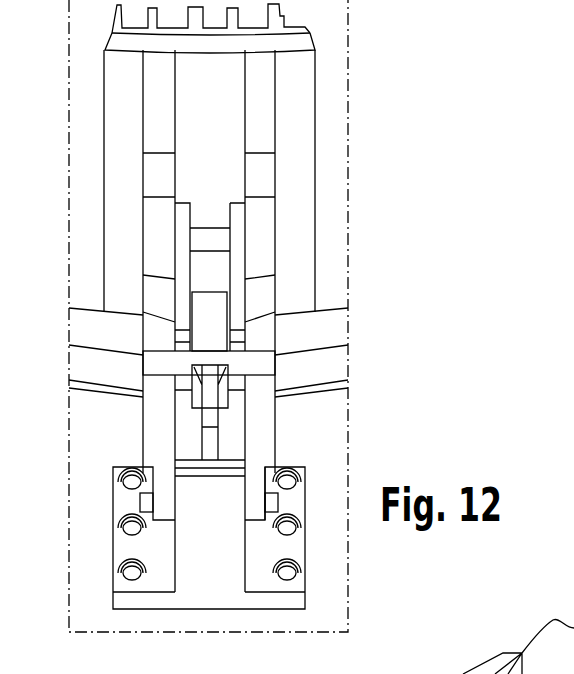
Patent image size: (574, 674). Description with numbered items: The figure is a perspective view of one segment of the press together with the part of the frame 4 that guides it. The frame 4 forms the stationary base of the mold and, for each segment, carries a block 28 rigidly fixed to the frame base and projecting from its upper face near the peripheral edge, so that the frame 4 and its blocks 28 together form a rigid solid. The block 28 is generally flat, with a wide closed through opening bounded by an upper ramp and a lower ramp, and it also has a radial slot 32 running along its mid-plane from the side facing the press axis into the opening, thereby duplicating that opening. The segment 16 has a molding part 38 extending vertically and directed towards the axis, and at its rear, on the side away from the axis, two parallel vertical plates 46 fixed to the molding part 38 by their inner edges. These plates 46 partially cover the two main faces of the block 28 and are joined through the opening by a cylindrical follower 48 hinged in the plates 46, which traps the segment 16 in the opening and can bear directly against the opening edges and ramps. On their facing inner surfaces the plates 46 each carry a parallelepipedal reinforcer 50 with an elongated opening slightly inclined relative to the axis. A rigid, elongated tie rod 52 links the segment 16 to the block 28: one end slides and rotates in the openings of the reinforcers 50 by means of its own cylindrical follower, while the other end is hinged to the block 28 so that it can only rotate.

The molding part 38 is at (283, 14).
The segment 16 is at (293, 82).
The vertical plates 46 is at (258, 118).
The reinforcer 50 is at (183, 212).
The tie rod 52 is at (211, 308).
The radial slot 32 is at (196, 397).
The block 28 is at (218, 520).
The follower 48 is at (140, 500).
The frame 4 is at (297, 549).